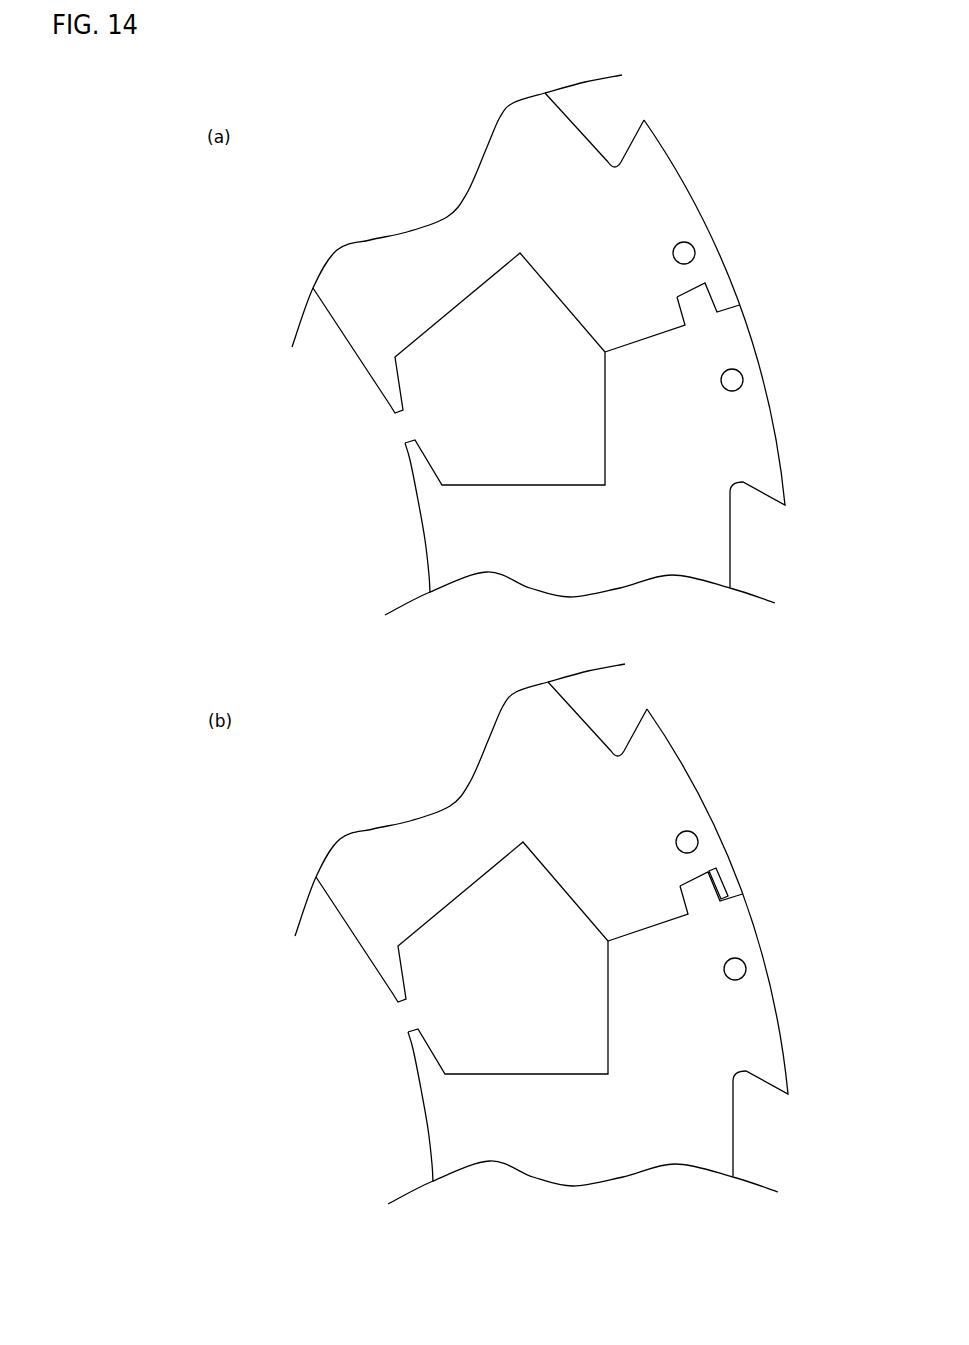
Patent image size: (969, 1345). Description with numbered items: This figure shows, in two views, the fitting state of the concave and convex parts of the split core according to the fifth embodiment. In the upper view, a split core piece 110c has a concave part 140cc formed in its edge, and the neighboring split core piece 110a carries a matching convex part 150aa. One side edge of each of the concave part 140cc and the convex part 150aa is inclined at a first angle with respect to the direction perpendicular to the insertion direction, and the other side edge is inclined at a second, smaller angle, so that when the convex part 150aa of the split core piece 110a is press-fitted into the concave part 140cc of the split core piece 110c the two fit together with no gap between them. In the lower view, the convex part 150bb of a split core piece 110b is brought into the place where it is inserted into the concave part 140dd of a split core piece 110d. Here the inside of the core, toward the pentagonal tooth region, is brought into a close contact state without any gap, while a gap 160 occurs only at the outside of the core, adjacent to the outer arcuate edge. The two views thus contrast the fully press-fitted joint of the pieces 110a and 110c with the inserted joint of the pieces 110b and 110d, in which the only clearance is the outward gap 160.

The split core piece 110a is at (771, 398).
The split core piece 110b is at (795, 1032).
The split core piece 110c is at (677, 167).
The split core piece 110d is at (702, 799).
The concave part 140cc is at (692, 290).
The concave part 140dd is at (732, 842).
The convex part 150aa is at (698, 300).
The convex part 150bb is at (721, 913).
The gap 160 is at (769, 860).